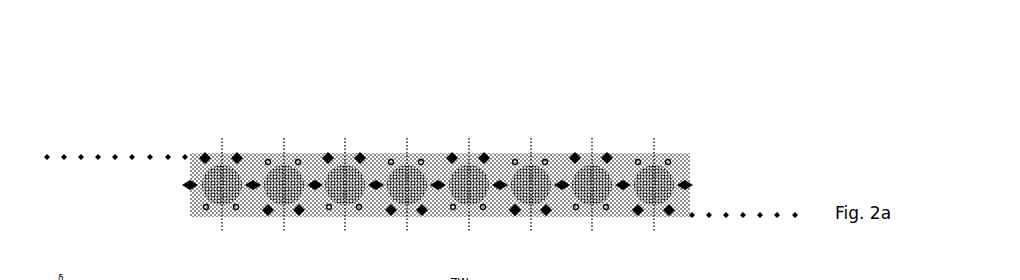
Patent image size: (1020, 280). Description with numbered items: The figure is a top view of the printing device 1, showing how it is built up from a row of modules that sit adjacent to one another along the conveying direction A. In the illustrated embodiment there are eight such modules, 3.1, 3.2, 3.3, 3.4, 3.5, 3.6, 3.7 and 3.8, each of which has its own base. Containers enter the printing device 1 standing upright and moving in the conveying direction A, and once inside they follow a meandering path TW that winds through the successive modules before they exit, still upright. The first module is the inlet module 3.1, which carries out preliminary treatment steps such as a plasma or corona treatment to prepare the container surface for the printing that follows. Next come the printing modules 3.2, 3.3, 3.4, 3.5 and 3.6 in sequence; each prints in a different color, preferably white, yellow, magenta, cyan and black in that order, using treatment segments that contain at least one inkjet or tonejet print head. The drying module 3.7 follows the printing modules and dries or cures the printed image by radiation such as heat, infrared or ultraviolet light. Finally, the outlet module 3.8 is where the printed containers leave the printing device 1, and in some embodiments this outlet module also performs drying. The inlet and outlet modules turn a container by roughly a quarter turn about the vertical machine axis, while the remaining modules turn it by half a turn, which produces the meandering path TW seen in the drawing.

The printing device 1 is at (728, 70).
The inlet module 3.1 is at (215, 151).
The printing module 3.2 is at (282, 150).
The printing module 3.3 is at (351, 150).
The printing module 3.4 is at (410, 150).
The printing module 3.5 is at (477, 150).
The printing module 3.6 is at (532, 150).
The drying module 3.7 is at (598, 150).
The outlet module 3.8 is at (660, 150).
The meandering path TW is at (515, 212).
The conveying direction A is at (104, 128).